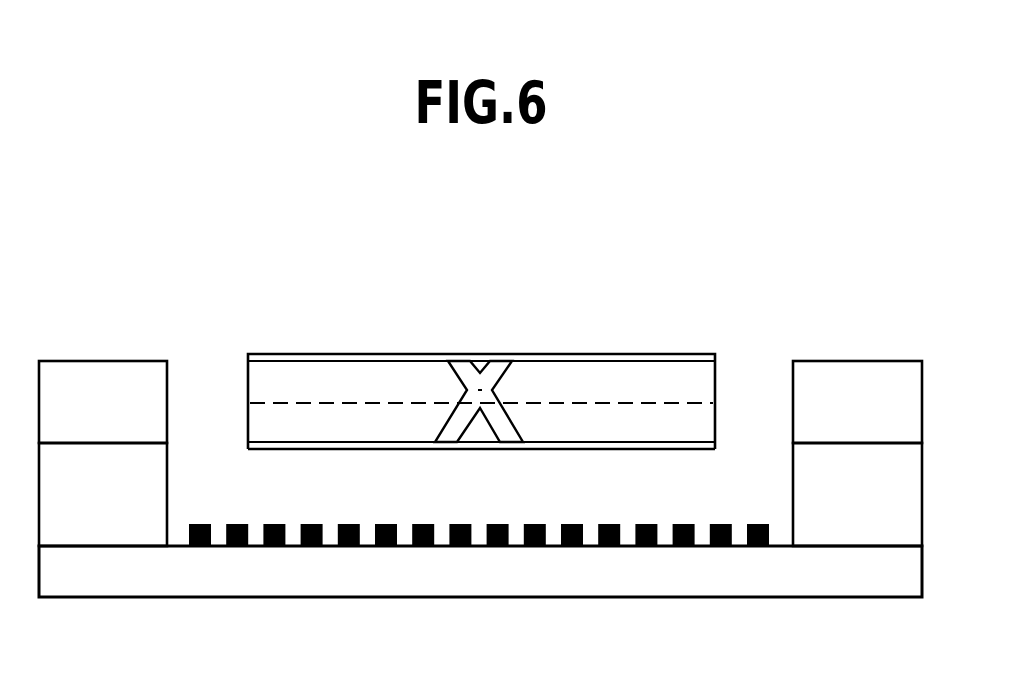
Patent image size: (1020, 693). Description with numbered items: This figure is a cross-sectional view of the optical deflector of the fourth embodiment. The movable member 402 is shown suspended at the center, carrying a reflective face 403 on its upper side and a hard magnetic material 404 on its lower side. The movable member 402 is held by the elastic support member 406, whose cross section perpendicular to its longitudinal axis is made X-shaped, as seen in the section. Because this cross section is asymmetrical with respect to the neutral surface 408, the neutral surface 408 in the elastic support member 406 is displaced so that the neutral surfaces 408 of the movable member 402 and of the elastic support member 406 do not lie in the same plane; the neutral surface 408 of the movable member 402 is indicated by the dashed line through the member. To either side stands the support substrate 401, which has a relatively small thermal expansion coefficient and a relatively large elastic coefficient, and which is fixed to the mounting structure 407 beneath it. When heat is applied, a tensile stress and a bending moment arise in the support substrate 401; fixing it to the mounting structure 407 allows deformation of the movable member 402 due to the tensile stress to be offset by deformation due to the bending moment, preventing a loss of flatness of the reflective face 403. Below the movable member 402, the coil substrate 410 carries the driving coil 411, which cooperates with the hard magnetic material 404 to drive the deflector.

The support substrate 401 is at (857, 403).
The movable member 402 is at (588, 410).
The reflective face 403 is at (283, 360).
The hard magnetic material 404 is at (550, 449).
The elastic support member 406 is at (497, 365).
The mounting structure 407 is at (860, 487).
The neutral surface 408 is at (480, 390).
The coil substrate 410 is at (217, 575).
The driving coil 411 is at (388, 548).